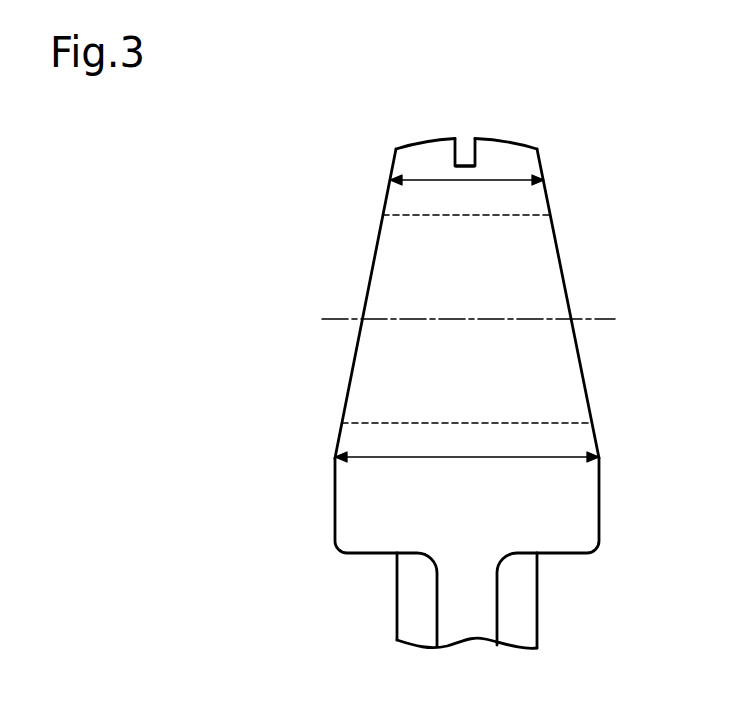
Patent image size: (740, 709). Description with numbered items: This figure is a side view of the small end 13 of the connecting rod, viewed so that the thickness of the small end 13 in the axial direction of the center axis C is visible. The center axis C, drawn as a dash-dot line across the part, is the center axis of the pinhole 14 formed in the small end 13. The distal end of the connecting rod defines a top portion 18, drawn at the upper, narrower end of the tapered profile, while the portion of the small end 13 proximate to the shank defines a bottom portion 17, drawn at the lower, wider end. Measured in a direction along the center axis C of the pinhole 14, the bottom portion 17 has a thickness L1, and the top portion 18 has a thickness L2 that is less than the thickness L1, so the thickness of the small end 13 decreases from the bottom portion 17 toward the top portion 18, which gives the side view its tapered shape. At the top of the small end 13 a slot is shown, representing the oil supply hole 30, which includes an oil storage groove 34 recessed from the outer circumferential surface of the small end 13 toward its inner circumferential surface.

The small end 13 is at (397, 274).
The pinhole 14 is at (563, 243).
The bottom portion 17 is at (555, 530).
The top portion 18 is at (508, 153).
The oil supply hole 30 is at (468, 131).
The oil storage groove 34 is at (465, 137).
The center axis C is at (597, 317).
The thickness of the bottom portion L1 is at (468, 459).
The thickness of the top portion L2 is at (447, 183).